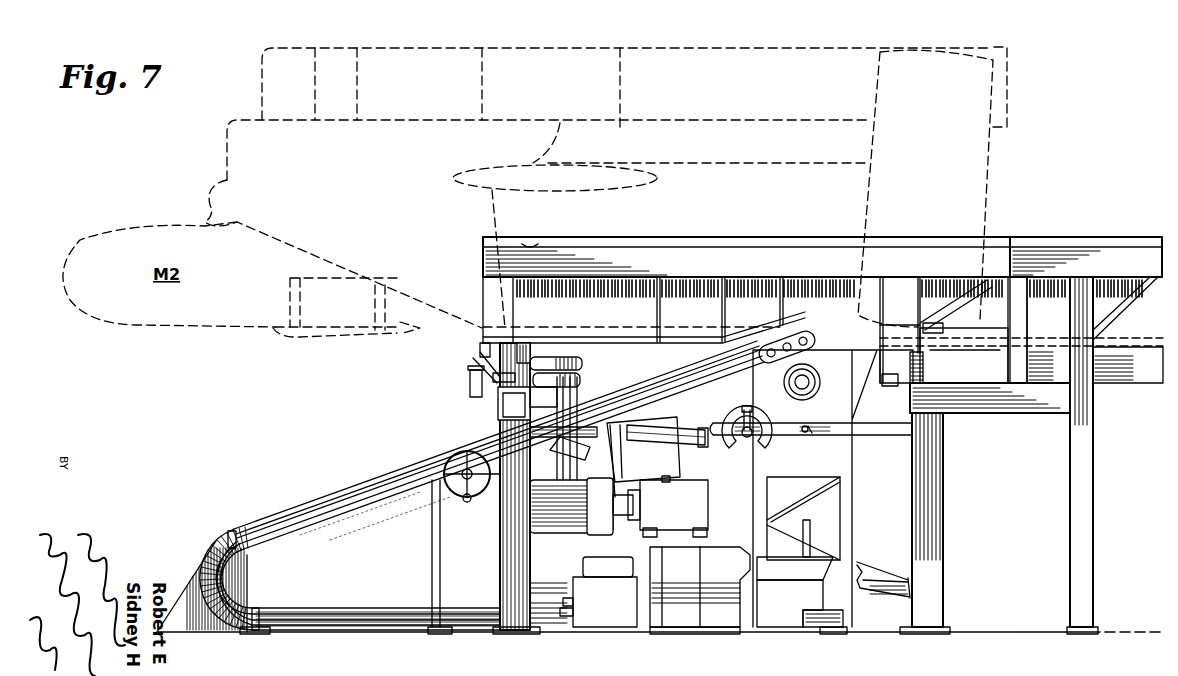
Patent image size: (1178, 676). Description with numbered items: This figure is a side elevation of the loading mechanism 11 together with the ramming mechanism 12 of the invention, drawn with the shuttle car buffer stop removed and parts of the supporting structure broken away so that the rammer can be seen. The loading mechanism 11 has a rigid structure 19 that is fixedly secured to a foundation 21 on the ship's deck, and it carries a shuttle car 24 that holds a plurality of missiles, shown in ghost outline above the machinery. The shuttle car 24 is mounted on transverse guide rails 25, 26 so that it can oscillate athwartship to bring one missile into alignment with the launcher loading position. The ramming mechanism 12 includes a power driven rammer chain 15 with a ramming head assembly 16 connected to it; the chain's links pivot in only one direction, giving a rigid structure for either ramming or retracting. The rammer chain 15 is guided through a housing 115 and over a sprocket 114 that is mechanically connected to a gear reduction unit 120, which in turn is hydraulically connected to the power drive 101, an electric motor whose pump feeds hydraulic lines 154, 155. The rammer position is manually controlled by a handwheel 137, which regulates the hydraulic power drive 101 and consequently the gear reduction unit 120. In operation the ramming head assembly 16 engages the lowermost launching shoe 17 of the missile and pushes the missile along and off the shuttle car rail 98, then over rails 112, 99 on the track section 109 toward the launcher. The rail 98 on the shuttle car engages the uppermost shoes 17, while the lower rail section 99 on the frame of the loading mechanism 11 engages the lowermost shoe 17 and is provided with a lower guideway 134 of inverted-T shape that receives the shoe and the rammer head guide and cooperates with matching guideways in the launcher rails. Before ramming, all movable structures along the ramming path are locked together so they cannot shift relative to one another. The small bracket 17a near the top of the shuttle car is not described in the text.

The loading mechanism 11 is at (956, 446).
The ramming mechanism 12 is at (482, 485).
The rammer chain 15 is at (818, 357).
The ramming head assembly 16 is at (953, 350).
The launching shoe 17 is at (973, 312).
The rail bracket 17a is at (527, 240).
The rigid structure 19 is at (943, 527).
The foundation 21 is at (1003, 633).
The shuttle car 24 is at (812, 310).
The transverse guide rail 25 is at (490, 396).
The transverse guide rail 26 is at (910, 400).
The shuttle car rail 98 is at (670, 237).
The lower rail section 99 is at (1043, 333).
The power drive 101 is at (700, 590).
The track section 109 is at (1079, 229).
The rail 112 is at (1130, 237).
The sprocket 114 is at (787, 370).
The housing 115 is at (350, 488).
The gear reduction unit 120 is at (811, 431).
The lower guideway 134 is at (990, 350).
The handwheel 137 is at (457, 453).
The hydraulic line 154 is at (565, 600).
The hydraulic line 155 is at (563, 610).